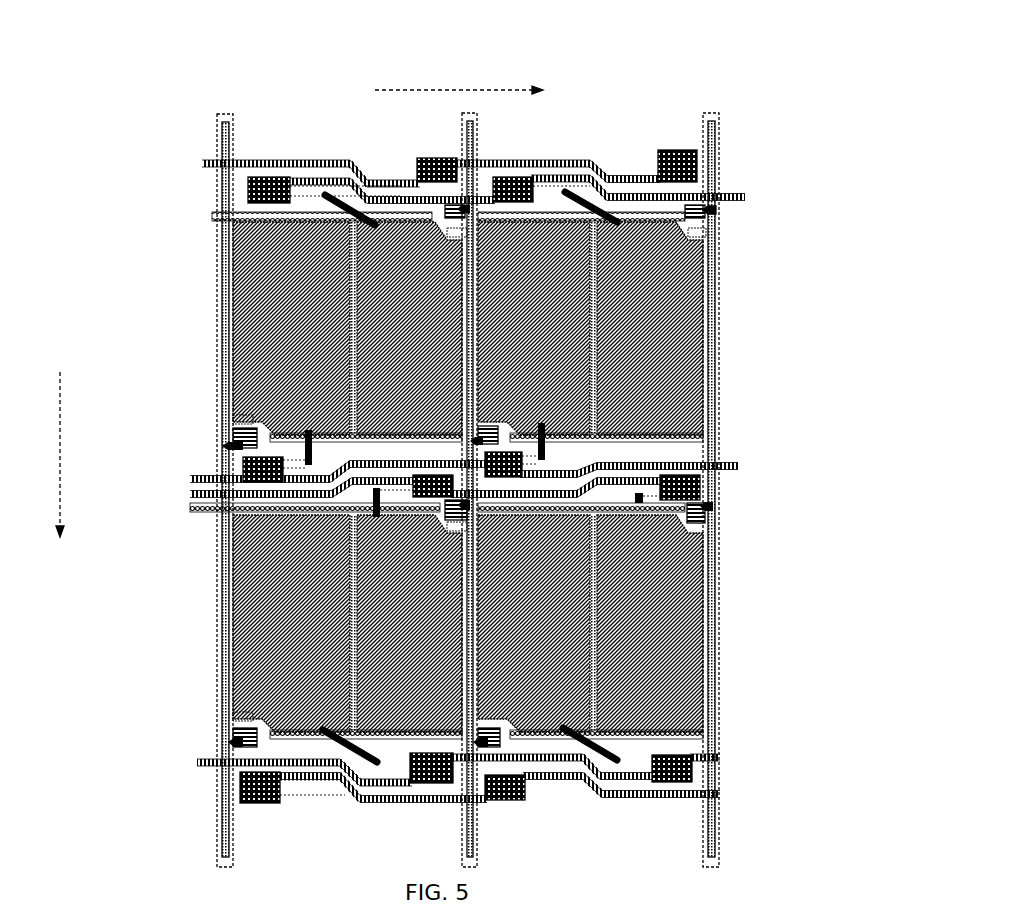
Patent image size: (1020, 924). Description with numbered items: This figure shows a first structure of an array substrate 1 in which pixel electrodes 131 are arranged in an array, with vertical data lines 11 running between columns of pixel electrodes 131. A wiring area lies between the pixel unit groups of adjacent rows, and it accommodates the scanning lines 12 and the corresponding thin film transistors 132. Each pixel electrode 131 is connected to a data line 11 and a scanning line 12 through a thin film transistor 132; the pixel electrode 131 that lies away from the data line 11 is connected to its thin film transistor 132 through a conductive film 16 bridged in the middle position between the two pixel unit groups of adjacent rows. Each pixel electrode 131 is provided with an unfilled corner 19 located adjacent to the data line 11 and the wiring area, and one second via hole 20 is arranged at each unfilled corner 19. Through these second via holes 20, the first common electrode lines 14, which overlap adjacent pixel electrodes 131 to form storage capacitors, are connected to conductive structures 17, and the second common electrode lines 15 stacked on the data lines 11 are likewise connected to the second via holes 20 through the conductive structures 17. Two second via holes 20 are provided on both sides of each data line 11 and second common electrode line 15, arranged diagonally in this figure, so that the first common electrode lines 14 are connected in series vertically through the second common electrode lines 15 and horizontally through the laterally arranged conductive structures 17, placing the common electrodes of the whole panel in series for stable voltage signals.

The array substrate 1 is at (625, 62).
The data line 11 is at (236, 121).
The scanning line 12 is at (210, 166).
The pixel electrode 131 is at (222, 292).
The thin film transistor 132 is at (432, 160).
The first common electrode line 14 is at (237, 428).
The second common electrode line 15 is at (222, 246).
The conductive film 16 is at (560, 180).
The conductive structure 17 is at (230, 448).
The unfilled corner 19 is at (727, 247).
The second via hole 20 is at (232, 446).